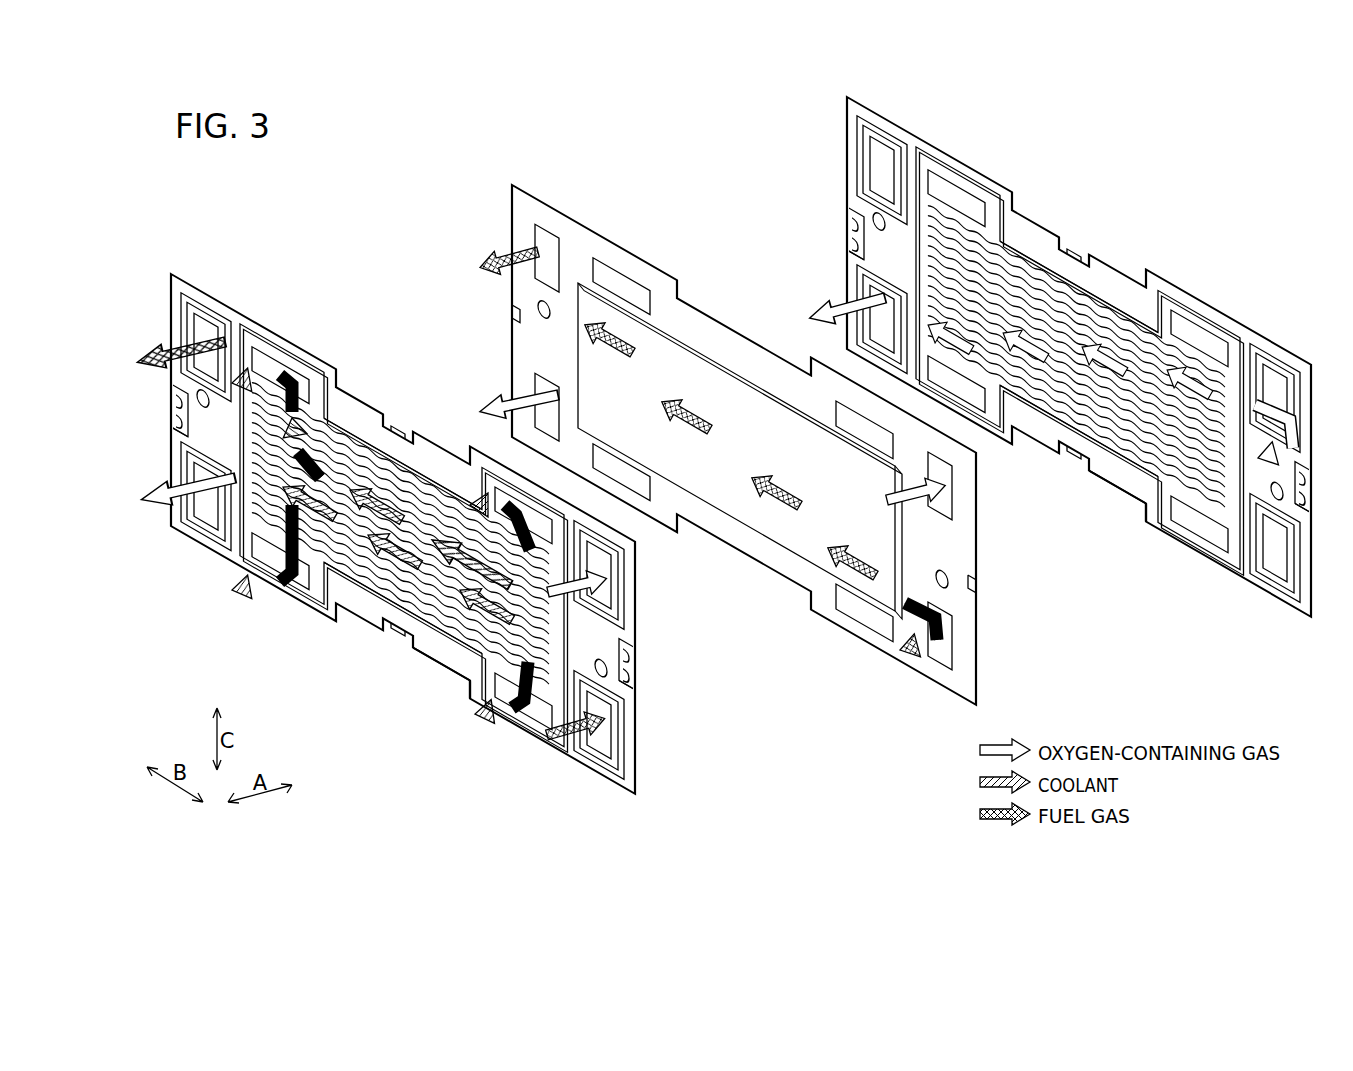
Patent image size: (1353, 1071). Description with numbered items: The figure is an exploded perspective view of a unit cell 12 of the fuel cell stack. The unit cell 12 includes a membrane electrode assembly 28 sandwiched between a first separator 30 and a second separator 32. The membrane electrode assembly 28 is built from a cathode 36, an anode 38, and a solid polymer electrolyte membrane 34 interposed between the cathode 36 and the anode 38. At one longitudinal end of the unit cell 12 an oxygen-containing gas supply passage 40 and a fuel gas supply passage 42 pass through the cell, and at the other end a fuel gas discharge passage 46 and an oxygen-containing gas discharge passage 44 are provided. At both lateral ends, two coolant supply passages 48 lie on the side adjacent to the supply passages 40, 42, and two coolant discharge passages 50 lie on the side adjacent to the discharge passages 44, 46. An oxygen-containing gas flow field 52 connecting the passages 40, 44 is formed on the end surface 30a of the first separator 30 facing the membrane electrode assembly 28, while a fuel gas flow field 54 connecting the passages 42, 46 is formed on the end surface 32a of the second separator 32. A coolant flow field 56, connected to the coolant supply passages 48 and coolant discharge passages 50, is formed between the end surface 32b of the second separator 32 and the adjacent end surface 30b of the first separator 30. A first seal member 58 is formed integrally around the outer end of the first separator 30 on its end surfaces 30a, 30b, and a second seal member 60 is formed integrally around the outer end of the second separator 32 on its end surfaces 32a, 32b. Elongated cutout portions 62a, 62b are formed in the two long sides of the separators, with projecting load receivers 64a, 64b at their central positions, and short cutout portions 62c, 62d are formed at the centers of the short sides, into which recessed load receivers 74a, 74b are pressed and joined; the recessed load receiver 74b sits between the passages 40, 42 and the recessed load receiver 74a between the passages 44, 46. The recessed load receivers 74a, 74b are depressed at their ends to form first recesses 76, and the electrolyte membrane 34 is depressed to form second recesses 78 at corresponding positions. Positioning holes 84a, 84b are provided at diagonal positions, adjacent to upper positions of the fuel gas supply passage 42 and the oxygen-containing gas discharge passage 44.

The unit cell 12 is at (306, 207).
The membrane electrode assembly 28 is at (531, 190).
The first separator 30 is at (903, 125).
The end surface of the first separator 30a is at (1117, 476).
The end surface of the first separator 30b is at (1133, 488).
The second separator 32 is at (186, 282).
The end surface of the second separator 32a is at (455, 670).
The end surface of the second separator 32b is at (443, 656).
The solid polymer electrolyte membrane 34 is at (946, 678).
The cathode 36 is at (712, 387).
The anode 38 is at (797, 530).
The oxygen-containing gas supply passage 40 is at (603, 593).
The fuel gas supply passage 42 is at (603, 743).
The oxygen-containing gas discharge passage 44 is at (210, 528).
The fuel gas discharge passage 46 is at (203, 332).
The coolant supply passage 48 is at (537, 708).
The coolant discharge passage 50 is at (300, 373).
The oxygen-containing gas flow field 52 is at (1050, 400).
The fuel gas flow field 54 is at (347, 460).
The coolant flow field 56 is at (353, 548).
The first seal member 58 is at (1027, 248).
The second seal member 60 is at (261, 338).
The cutout portion 62a is at (442, 443).
The cutout portion 62b is at (365, 627).
The short cutout portion 62c is at (175, 424).
The short cutout portion 62d is at (627, 688).
The projecting load receiver 64a is at (403, 425).
The projecting load receiver 64b is at (402, 656).
The recessed load receiver 74a is at (176, 393).
The recessed load receiver 74b is at (631, 649).
The first recess 76 is at (178, 405).
The second recess 78 is at (517, 309).
The positioning hole 84a is at (603, 668).
The positioning hole 84b is at (208, 402).